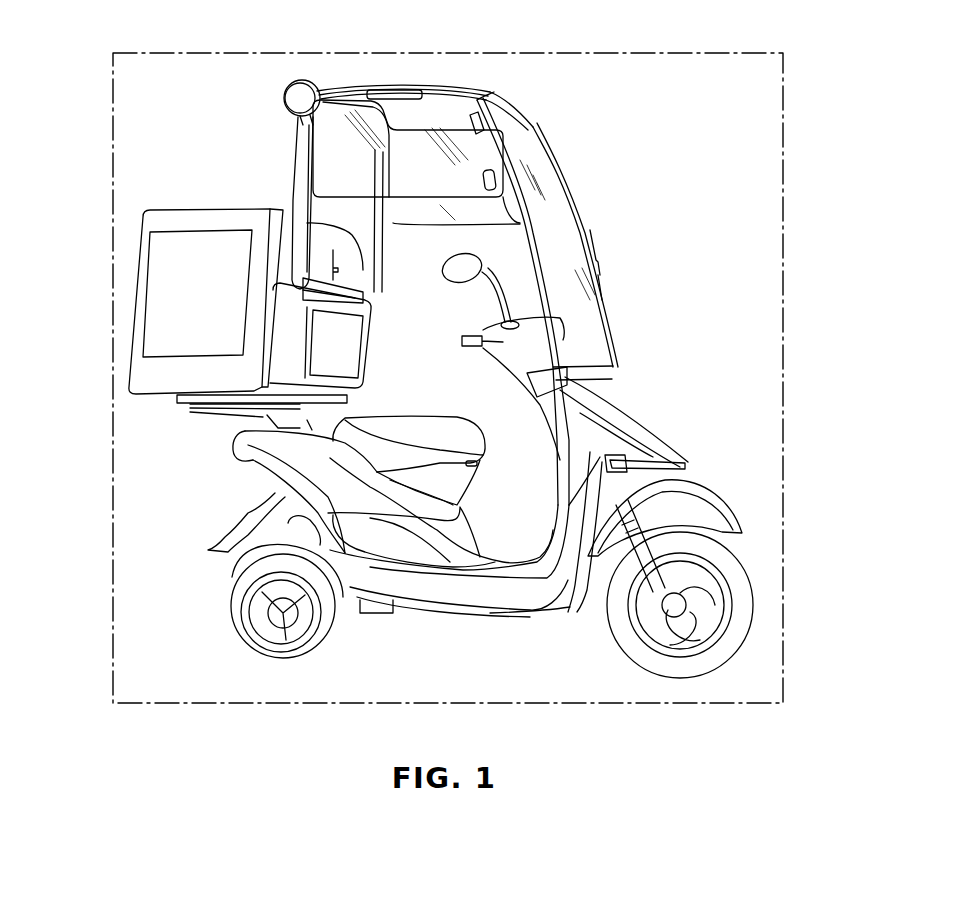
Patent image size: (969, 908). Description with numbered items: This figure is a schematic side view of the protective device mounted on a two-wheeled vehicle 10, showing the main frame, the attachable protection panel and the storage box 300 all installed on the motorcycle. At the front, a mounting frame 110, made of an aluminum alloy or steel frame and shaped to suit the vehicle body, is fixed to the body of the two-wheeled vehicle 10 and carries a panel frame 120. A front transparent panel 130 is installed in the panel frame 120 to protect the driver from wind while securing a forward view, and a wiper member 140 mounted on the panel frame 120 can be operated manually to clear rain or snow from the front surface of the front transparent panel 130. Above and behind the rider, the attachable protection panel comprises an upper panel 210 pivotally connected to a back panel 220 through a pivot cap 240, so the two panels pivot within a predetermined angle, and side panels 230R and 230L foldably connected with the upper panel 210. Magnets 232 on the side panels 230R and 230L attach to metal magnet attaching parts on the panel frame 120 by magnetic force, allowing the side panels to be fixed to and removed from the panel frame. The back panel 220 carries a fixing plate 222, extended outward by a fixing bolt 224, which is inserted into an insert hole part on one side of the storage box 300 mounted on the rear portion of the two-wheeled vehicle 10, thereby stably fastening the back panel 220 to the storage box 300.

The two-wheeled vehicle 10 is at (653, 435).
The mounting frame 110 is at (683, 463).
The panel frame 120 is at (540, 243).
The front transparent panel 130 is at (507, 217).
The wiper member 140 is at (600, 277).
The upper panel 210 is at (388, 82).
The back panel 220 is at (297, 147).
The fixing plate 222 is at (353, 297).
The fixing bolt 224 is at (337, 268).
The side panel 230R is at (412, 140).
The side panel 230L is at (553, 240).
The magnet 232 is at (493, 88).
The pivot cap 240 is at (298, 78).
The storage box 300 is at (143, 238).